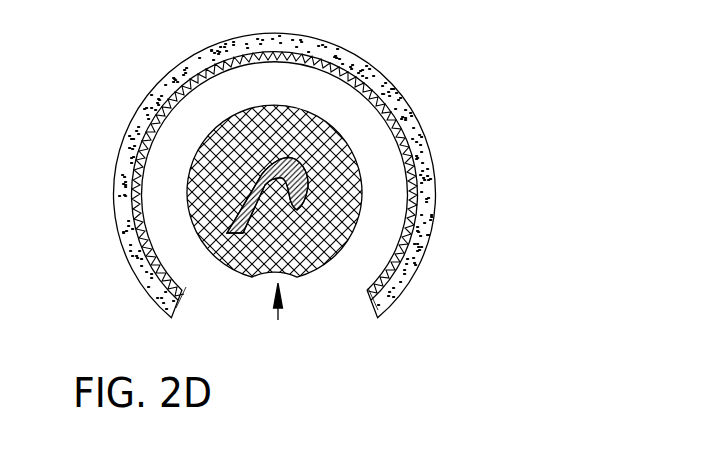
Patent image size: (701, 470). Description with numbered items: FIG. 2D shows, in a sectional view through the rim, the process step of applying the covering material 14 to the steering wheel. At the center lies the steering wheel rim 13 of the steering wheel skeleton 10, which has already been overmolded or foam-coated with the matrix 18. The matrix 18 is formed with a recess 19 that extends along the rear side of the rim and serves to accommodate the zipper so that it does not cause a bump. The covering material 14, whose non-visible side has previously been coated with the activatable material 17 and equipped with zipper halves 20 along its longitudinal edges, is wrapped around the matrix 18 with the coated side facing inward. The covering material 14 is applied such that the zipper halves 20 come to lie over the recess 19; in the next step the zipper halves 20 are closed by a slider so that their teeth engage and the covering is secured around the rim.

The covering material 14 is at (407, 117).
The activatable material 17 is at (367, 89).
The matrix 18 is at (335, 229).
The steering wheel skeleton 10 is at (379, 195).
The steering wheel rim 13 is at (300, 178).
The recess 19 is at (278, 320).
The zipper halves 20 is at (183, 288).